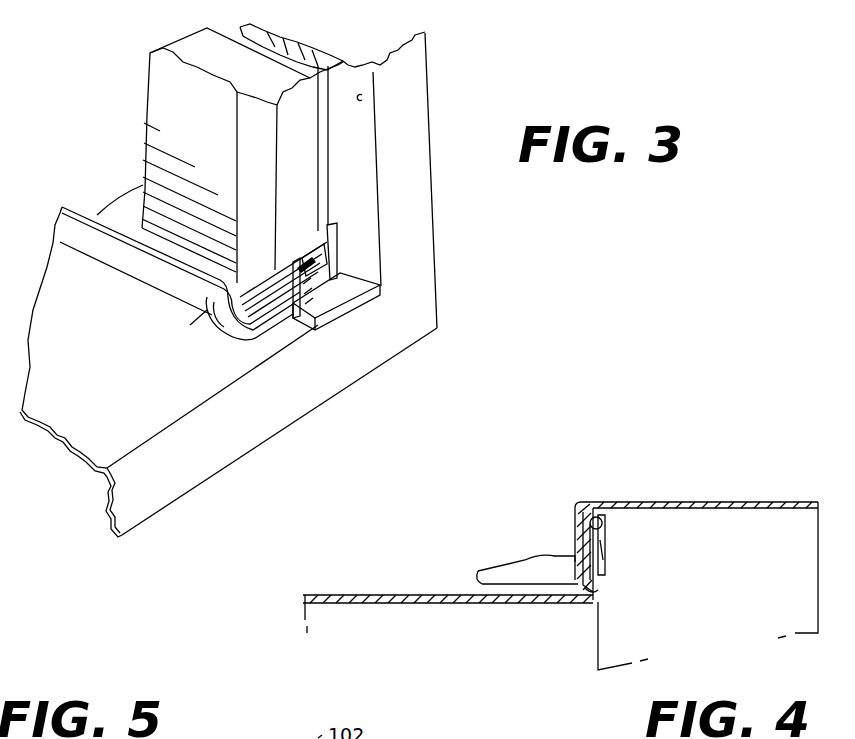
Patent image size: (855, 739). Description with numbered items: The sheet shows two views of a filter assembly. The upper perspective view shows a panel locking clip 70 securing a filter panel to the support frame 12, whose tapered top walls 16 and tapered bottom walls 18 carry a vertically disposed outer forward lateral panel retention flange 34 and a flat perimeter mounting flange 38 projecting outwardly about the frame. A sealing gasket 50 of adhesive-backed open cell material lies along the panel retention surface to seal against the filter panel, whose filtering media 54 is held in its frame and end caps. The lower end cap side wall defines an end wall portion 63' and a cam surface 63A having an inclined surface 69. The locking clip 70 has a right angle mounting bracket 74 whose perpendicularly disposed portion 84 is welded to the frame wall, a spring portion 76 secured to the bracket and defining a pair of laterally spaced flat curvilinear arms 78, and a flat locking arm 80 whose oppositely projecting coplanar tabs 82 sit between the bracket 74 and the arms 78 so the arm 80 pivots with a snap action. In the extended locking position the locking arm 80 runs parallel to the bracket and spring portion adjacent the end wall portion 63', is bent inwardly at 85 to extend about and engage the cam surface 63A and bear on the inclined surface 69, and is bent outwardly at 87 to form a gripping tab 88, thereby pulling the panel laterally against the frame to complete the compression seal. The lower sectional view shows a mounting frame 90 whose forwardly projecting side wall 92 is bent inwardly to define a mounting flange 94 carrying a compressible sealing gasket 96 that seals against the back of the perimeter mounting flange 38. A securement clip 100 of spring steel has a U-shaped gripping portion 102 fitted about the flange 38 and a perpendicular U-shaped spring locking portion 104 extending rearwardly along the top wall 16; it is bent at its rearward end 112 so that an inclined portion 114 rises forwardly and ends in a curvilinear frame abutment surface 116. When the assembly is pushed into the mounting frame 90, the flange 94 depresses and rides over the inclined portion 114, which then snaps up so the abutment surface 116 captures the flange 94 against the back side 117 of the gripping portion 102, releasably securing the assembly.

In FIG. 3, the support frame 12 is at (433, 138).
In FIG. 4, the tapered top wall 16 is at (333, 593).
In FIG. 3, the tapered bottom wall 18 is at (120, 392).
In FIG. 3, the outer forward lateral panel retention flange 34 is at (364, 97).
In FIG. 4, the perimeter mounting flange 38 is at (598, 520).
In FIG. 3, the sealing gasket 50 is at (315, 62).
In FIG. 3, the filtering media 54 is at (170, 107).
In FIG. 3, the end wall portion 63' is at (282, 173).
In FIG. 3, the cam surface 63A is at (232, 337).
In FIG. 3, the inclined surface 69 is at (198, 272).
In FIG. 3, the locking clip 70 is at (345, 249).
In FIG. 3, the mounting bracket 74 is at (318, 240).
In FIG. 3, the spring portion 76 is at (352, 244).
In FIG. 3, the curvilinear arm 78 is at (307, 250).
In FIG. 3, the locking arm 80 is at (266, 325).
In FIG. 3, the tab 82 is at (295, 263).
In FIG. 3, the perpendicularly disposed portion 84 is at (345, 293).
In FIG. 3, the inward bend 85 is at (243, 332).
In FIG. 3, the outward bend 87 is at (222, 333).
In FIG. 3, the gripping tab 88 is at (190, 325).
In FIG. 4, the mounting frame 90 is at (716, 496).
In FIG. 4, the side wall 92 is at (783, 502).
In FIG. 4, the mounting flange 94 is at (573, 527).
In FIG. 4, the compressible sealing gasket 96 is at (585, 512).
In FIG. 4, the securement clip 100 is at (500, 556).
In FIG. 4, the U-shaped gripping portion 102 is at (607, 542).
In FIG. 4, the U-shaped spring locking portion 104 is at (485, 567).
In FIG. 4, the rearward end 112 is at (475, 575).
In FIG. 4, the inclined portion 114 is at (527, 556).
In FIG. 4, the frame abutment surface 116 is at (605, 558).
In FIG. 4, the back side 117 is at (598, 592).